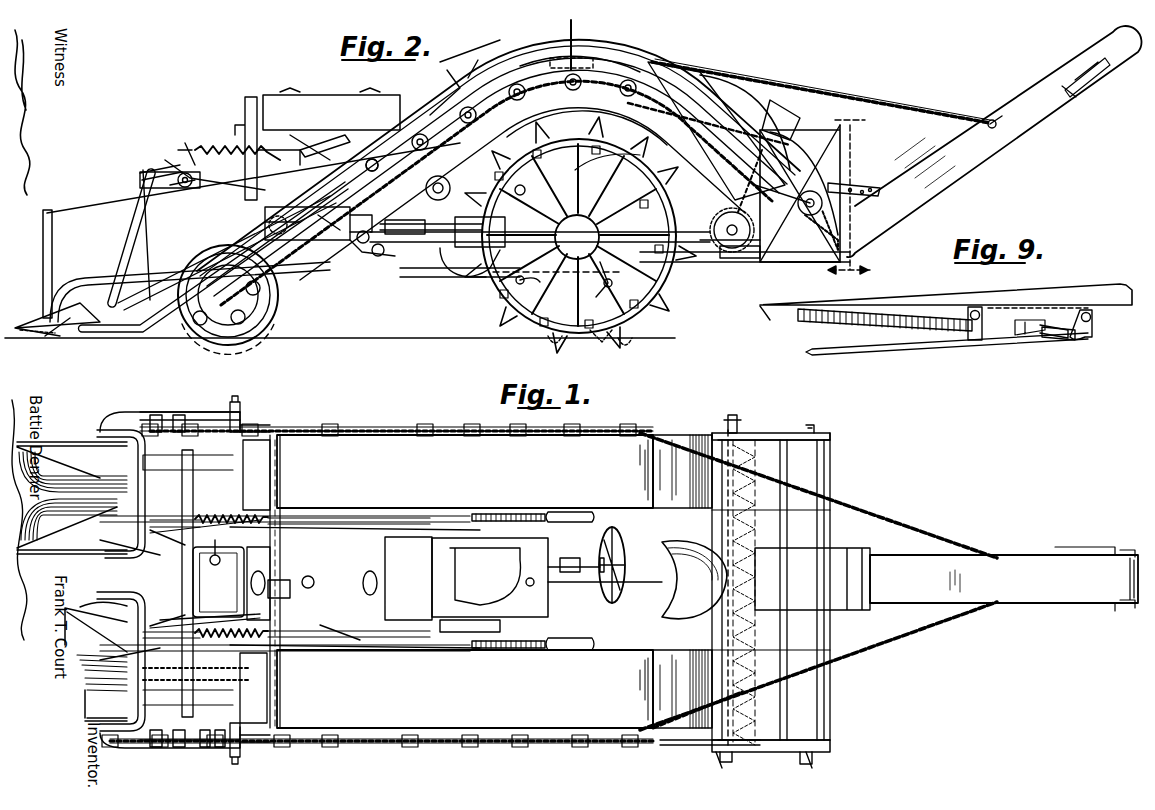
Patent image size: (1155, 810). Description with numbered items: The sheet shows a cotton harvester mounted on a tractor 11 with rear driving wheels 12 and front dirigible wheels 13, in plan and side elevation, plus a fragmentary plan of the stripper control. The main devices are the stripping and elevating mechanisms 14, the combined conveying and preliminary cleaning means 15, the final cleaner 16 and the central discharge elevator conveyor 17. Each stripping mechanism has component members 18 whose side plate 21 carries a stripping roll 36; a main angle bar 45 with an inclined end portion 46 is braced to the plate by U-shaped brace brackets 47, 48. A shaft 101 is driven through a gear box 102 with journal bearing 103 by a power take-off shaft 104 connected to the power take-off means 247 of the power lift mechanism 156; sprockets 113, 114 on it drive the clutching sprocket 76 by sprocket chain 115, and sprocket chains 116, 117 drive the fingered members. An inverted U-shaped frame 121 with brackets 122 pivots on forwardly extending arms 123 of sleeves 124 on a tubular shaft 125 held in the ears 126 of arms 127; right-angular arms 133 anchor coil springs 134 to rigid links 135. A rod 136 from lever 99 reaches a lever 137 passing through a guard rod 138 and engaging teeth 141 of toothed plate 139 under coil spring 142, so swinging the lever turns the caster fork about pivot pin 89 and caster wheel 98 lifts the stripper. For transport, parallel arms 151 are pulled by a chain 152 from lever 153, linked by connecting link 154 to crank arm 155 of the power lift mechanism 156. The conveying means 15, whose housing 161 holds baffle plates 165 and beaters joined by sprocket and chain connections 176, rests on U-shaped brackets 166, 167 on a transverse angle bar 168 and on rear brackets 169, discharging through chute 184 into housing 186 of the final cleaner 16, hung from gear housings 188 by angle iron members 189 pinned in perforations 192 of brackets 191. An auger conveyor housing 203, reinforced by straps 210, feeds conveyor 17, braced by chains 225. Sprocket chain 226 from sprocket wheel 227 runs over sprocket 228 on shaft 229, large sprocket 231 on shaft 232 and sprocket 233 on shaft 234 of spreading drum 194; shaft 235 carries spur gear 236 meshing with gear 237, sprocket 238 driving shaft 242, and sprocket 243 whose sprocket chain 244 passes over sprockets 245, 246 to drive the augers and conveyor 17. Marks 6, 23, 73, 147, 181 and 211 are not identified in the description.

In FIG. 2, the section line 6- 6 is at (849, 200).
In FIG. 2, the tractor 11 is at (335, 108).
In FIG. 1, the tractor 11 is at (445, 535).
In FIG. 2, the rear driving wheels 12 is at (646, 285).
In FIG. 2, the front dirigible wheels 13 is at (264, 320).
In FIG. 2, the stripping and elevating mechanisms 14 is at (100, 335).
In FIG. 1, the stripping and elevating mechanisms 14 is at (72, 455).
In FIG. 2, the combined conveying and preliminary cleaning means 15 is at (510, 62).
In FIG. 1, the combined conveying and preliminary cleaning means 15 is at (438, 432).
In FIG. 2, the final cleaner 16 is at (790, 165).
In FIG. 1, the final cleaner 16 is at (772, 703).
In FIG. 2, the discharge elevator conveyor 17 is at (1005, 102).
In FIG. 1, the discharge elevator conveyor 17 is at (1008, 565).
In FIG. 2, the component member 18 is at (72, 262).
In FIG. 1, the component member 18 is at (104, 430).
In FIG. 2, the side plate 21 is at (100, 250).
In FIG. 2, the fork / gathering point 23 is at (28, 322).
In FIG. 1, the fork / gathering point 23 is at (34, 443).
In FIG. 1, the stripping roll 36 is at (235, 480).
In FIG. 2, the main angle bar 45 is at (150, 275).
In FIG. 1, the main angle bar 45 is at (156, 415).
In FIG. 1, the inclined end portion 46 is at (118, 420).
In FIG. 1, the U-shaped brace bracket 47 is at (180, 415).
In FIG. 1, the U-shaped brace bracket 48 is at (242, 412).
In FIG. 1, the post 73 is at (160, 750).
In FIG. 1, the clutching sprocket 76 is at (220, 750).
In FIG. 2, the pivot pin 89 is at (42, 338).
In FIG. 2, the caster wheel 98 is at (65, 335).
In FIG. 2, the lever 99 is at (43, 244).
In FIG. 1, the lever 99 is at (90, 560).
In FIG. 2, the shaft 101 is at (285, 245).
In FIG. 1, the shaft 101 is at (268, 522).
In FIG. 1, the gear box 102 is at (288, 640).
In FIG. 2, the journal bearing 103 is at (300, 242).
In FIG. 2, the power take-off shaft 104 is at (355, 240).
In FIG. 1, the power take-off shaft 104 is at (318, 650).
In FIG. 2, the sprocket 113 is at (258, 158).
In FIG. 2, the sprocket 114 is at (288, 155).
In FIG. 1, the sprocket chain 115 is at (246, 430).
In FIG. 1, the sprocket chain 116 is at (208, 404).
In FIG. 1, the sprocket chain 117 is at (172, 410).
In FIG. 2, the U-shaped inverted frame 121 is at (142, 176).
In FIG. 1, the U-shaped inverted frame 121 is at (160, 565).
In FIG. 2, the brackets 122 is at (150, 170).
In FIG. 2, the forwardly extending arm 123 is at (175, 180).
In FIG. 1, the forwardly extending arm 123 is at (195, 532).
In FIG. 2, the sleeve 124 is at (168, 190).
In FIG. 1, the sleeve 124 is at (188, 578).
In FIG. 1, the tubular shaft 125 is at (182, 590).
In FIG. 1, the ears 126 is at (208, 555).
In FIG. 1, the spaced arms 127 is at (218, 582).
In FIG. 2, the right-angularly extending arms 133 is at (190, 145).
In FIG. 1, the right-angularly extending arms 133 is at (170, 530).
In FIG. 2, the coil spring 134 is at (237, 144).
In FIG. 1, the coil spring 134 is at (285, 512).
In FIG. 2, the rigid links 135 is at (305, 134).
In FIG. 1, the rigid links 135 is at (340, 526).
In FIG. 2, the rod 136 is at (95, 203).
In FIG. 9, the rod 136 is at (808, 353).
In FIG. 1, the rod 136 is at (425, 504).
In FIG. 2, the lever 137 is at (568, 32).
In FIG. 9, the lever 137 is at (1040, 337).
In FIG. 1, the lever 137 is at (575, 556).
In FIG. 2, the guard rod 138 is at (590, 50).
In FIG. 9, the guard rod 138 is at (1062, 342).
In FIG. 1, the guard rod 138 is at (615, 528).
In FIG. 9, the toothed plate 139 is at (1062, 312).
In FIG. 1, the toothed plate 139 is at (578, 512).
In FIG. 9, the teeth 141 is at (1052, 340).
In FIG. 9, the coil spring 142 is at (852, 325).
In FIG. 1, the coil spring 142 is at (486, 514).
In FIG. 1, the bracket 147 is at (478, 634).
In FIG. 2, the parallel arms 151 is at (180, 160).
In FIG. 1, the parallel arms 151 is at (182, 632).
In FIG. 2, the chain 152 is at (200, 183).
In FIG. 1, the chain 152 is at (270, 625).
In FIG. 2, the lever 153 is at (366, 245).
In FIG. 2, the connecting link 154 is at (430, 236).
In FIG. 2, the crank arm 155 is at (460, 250).
In FIG. 2, the power lift mechanism 156 is at (470, 275).
In FIG. 2, the housing 161 is at (462, 80).
In FIG. 9, the housing 161 is at (764, 319).
In FIG. 1, the housing 161 is at (395, 430).
In FIG. 2, the baffle plate 165 is at (380, 130).
In FIG. 2, the U-shaped bracket 166 is at (372, 172).
In FIG. 2, the U-shaped bracket 167 is at (360, 258).
In FIG. 2, the transversely extending angle bar 168 is at (379, 258).
In FIG. 2, the vertically disposed brackets 169 is at (565, 171).
In FIG. 2, the sprocket and chain connections 176 is at (560, 98).
In FIG. 1, the sprocket and chain connections 176 is at (405, 424).
In FIG. 2, the bar 181 is at (325, 145).
In FIG. 2, the chute 184 is at (740, 85).
In FIG. 1, the chute 184 is at (686, 437).
In FIG. 2, the housing 186 is at (770, 265).
In FIG. 1, the housing 186 is at (812, 426).
In FIG. 2, the gear housings 188 is at (604, 231).
In FIG. 2, the angle iron members 189 is at (700, 264).
In FIG. 2, the brackets 191 is at (600, 290).
In FIG. 2, the perforations 192 is at (612, 322).
In FIG. 1, the spreading drum 194 is at (728, 522).
In FIG. 2, the auger conveyor housing 203 is at (812, 176).
In FIG. 1, the auger conveyor housing 203 is at (812, 508).
In FIG. 1, the straps 210 is at (776, 568).
In FIG. 2, the beam / chain 211 is at (928, 196).
In FIG. 1, the beam / chain 211 is at (922, 606).
In FIG. 2, the chains 225 is at (860, 98).
In FIG. 1, the chains 225 is at (940, 520).
In FIG. 2, the sprocket chain 226 is at (760, 126).
In FIG. 1, the sprocket chain 226 is at (704, 747).
In FIG. 2, the sprocket wheel 227 is at (668, 66).
In FIG. 1, the sprocket wheel 227 is at (656, 745).
In FIG. 2, the sprocket 228 is at (782, 125).
In FIG. 1, the sprocket 228 is at (770, 757).
In FIG. 2, the shaft 229 is at (795, 145).
In FIG. 2, the large sprocket 231 is at (713, 229).
In FIG. 2, the shaft 232 is at (715, 230).
In FIG. 2, the sprocket 233 is at (690, 150).
In FIG. 2, the shaft 234 is at (710, 195).
In FIG. 2, the shaft 235 is at (797, 205).
In FIG. 1, the spur gear 236 is at (771, 421).
In FIG. 1, the gear 237 is at (730, 425).
In FIG. 1, the sprocket 238 is at (780, 422).
In FIG. 2, the shaft 242 is at (735, 258).
In FIG. 2, the sprocket 243 is at (778, 188).
In FIG. 2, the sprocket chain 244 is at (805, 222).
In FIG. 2, the sprocket 245 is at (860, 183).
In FIG. 2, the sprocket 246 is at (815, 263).
In FIG. 2, the power take-off means 247 is at (434, 194).